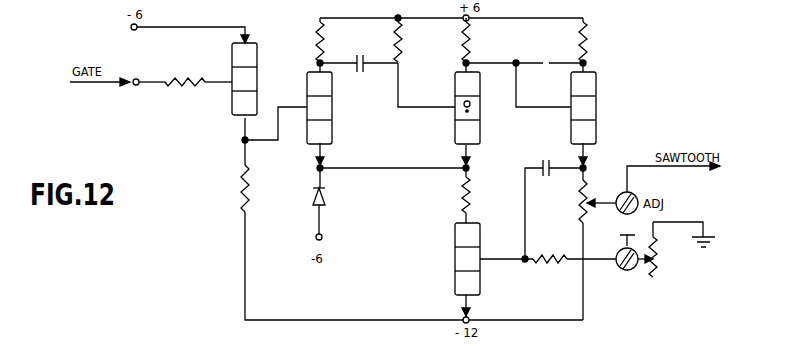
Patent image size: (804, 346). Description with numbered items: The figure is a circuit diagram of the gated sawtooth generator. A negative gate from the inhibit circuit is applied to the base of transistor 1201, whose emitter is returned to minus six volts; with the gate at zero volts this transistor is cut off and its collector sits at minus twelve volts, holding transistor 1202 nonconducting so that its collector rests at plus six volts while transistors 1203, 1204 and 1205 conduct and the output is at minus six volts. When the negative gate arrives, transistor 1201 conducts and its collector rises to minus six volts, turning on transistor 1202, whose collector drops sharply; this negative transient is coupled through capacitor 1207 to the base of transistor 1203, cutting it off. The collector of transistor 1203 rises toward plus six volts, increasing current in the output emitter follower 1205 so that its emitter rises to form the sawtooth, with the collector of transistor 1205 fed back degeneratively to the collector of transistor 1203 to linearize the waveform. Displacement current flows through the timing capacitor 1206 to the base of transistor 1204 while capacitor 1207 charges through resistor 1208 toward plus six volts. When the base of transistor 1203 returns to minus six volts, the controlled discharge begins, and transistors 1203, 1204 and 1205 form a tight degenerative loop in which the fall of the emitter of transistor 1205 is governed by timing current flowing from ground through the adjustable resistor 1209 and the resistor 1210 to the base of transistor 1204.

The transistor 1201 is at (232, 117).
The transistor 1202 is at (332, 118).
The transistor 1203 is at (455, 123).
The transistor 1204 is at (455, 271).
The output emitter follower 1205 is at (571, 97).
The timing capacitor 1206 is at (551, 170).
The capacitor 1207 is at (366, 67).
The resistor 1208 is at (395, 46).
The adjustable resistor 1209 is at (629, 294).
The resistor 1210 is at (551, 264).